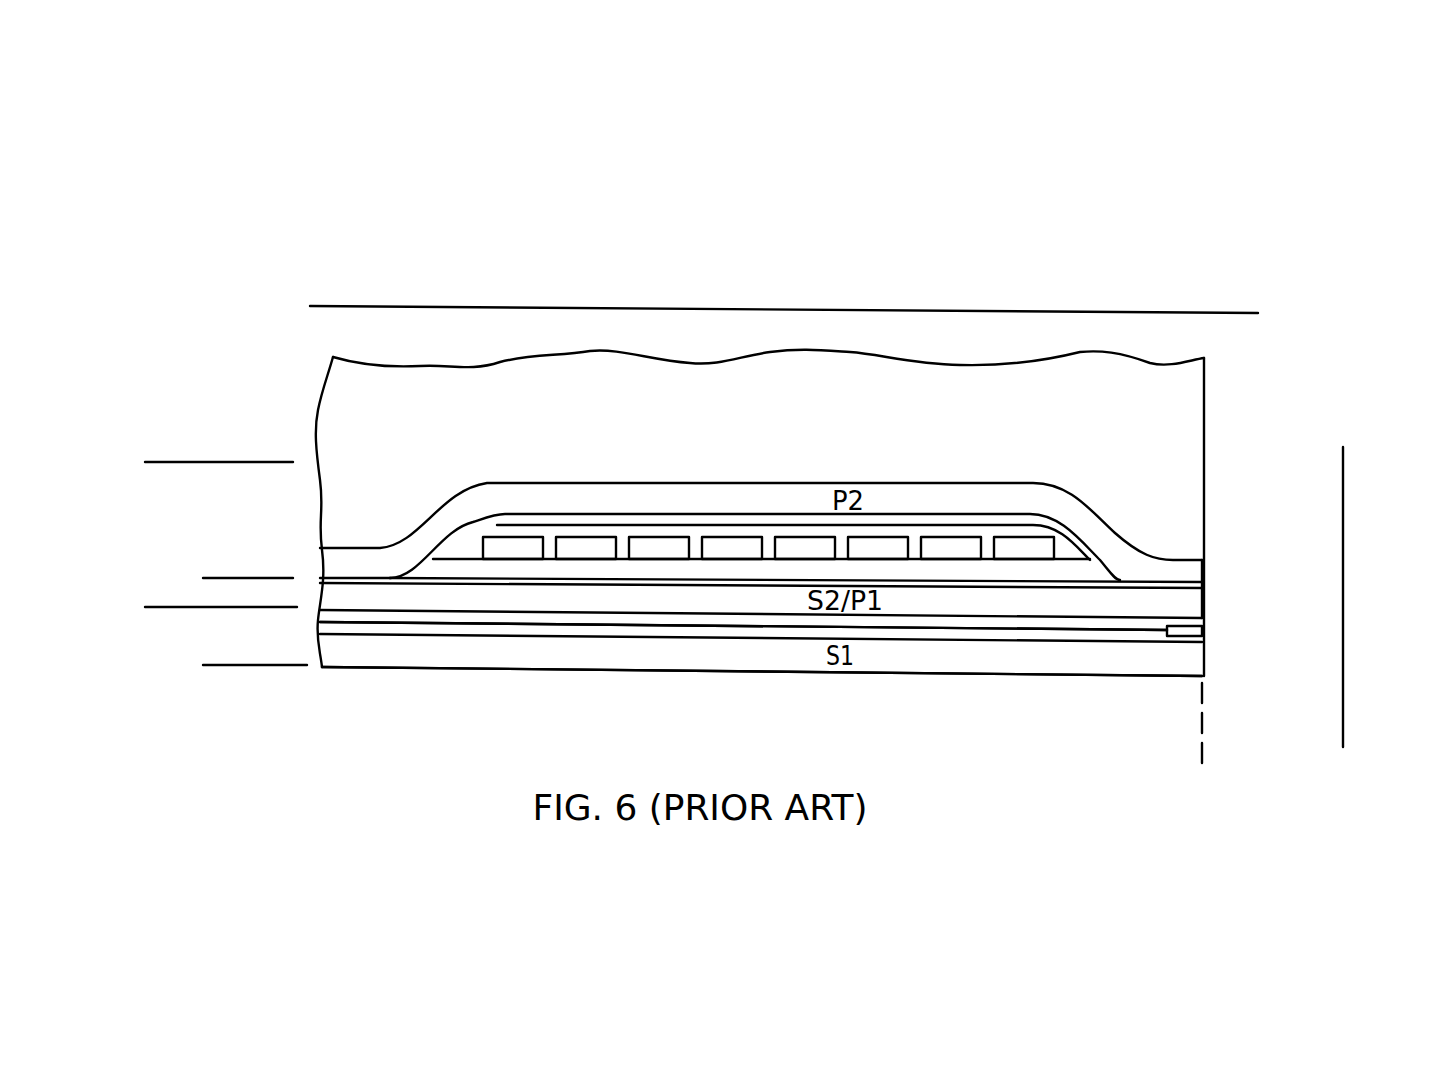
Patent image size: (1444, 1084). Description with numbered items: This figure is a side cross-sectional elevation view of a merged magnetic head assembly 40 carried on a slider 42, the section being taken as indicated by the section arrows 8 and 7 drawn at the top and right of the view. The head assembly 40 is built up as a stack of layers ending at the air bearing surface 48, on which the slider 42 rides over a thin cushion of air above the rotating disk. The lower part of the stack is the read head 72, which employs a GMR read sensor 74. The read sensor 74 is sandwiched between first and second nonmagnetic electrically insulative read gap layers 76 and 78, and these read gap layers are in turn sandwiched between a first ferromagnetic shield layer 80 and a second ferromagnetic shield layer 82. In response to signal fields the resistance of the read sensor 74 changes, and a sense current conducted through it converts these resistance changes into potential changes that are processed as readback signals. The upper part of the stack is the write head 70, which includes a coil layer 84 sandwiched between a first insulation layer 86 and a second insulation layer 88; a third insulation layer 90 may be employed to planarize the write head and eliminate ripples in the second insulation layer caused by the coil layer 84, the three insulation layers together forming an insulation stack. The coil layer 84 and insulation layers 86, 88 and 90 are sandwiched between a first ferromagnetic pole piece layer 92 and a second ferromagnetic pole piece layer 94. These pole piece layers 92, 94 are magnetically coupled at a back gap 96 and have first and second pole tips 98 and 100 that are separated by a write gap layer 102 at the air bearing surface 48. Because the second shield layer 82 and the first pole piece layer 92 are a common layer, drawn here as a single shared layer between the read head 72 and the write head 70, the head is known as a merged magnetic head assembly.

The section line 8- 8 is at (333, 295).
The section line 7- 7 is at (1355, 470).
The magnetic head assembly 40 is at (292, 372).
The slider 42 is at (1182, 392).
The air bearing surface 48 is at (1202, 708).
The write head 70 is at (242, 566).
The read head 72 is at (242, 677).
The GMR read sensor 74 is at (1195, 631).
The first read gap layer 76 is at (770, 640).
The second read gap layer 78 is at (697, 607).
The first ferromagnetic shield layer 80 is at (933, 655).
The second ferromagnetic shield layer 82 is at (1008, 603).
The first ferromagnetic pole piece layer 92 is at (1008, 690).
The coil layer 84 is at (735, 547).
The first insulation layer 86 is at (597, 568).
The second insulation layer 88 is at (1068, 555).
The third insulation layer 90 is at (512, 518).
The second ferromagnetic pole piece layer 94 is at (932, 490).
The back gap 96 is at (345, 578).
The first pole tip 98 is at (1203, 607).
The second pole tip 100 is at (1197, 572).
The write gap layer 102 is at (1200, 586).